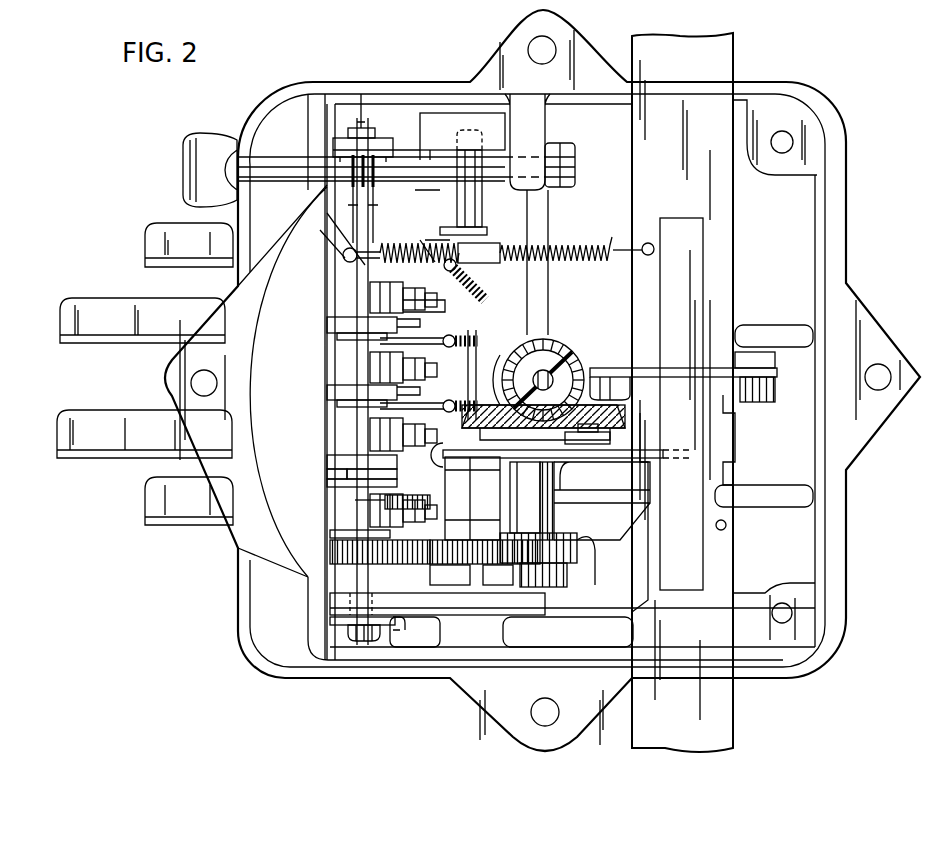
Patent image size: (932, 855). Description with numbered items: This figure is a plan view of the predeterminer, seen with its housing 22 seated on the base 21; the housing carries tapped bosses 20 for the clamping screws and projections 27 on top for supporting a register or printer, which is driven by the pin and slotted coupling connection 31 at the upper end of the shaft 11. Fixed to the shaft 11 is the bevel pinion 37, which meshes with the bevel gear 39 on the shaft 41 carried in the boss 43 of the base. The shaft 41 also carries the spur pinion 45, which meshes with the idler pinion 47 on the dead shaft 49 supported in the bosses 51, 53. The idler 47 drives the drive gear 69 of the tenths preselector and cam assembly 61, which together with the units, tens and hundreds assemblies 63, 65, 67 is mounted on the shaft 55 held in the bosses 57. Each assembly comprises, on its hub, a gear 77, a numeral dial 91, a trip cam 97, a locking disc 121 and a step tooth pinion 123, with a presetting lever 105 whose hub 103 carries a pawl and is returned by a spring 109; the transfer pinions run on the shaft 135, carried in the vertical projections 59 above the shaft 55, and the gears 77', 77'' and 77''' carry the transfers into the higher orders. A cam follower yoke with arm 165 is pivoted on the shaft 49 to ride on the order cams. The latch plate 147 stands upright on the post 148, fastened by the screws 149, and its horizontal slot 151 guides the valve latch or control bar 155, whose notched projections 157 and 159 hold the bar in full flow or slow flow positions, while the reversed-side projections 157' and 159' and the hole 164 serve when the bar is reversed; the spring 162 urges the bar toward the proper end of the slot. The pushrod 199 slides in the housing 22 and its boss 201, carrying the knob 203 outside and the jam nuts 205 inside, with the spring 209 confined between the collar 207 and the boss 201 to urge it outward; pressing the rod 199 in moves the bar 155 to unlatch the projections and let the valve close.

The shaft 11 is at (543, 350).
The bosses 20 is at (766, 168).
The base 21 is at (548, 275).
The predeterminer housing 22 is at (846, 563).
The projections 27 is at (576, 40).
The pin and slotted coupling connection 31 is at (560, 365).
The bevel pinion 37 is at (528, 348).
The bevel gear 39 is at (478, 345).
The shaft 41 is at (530, 585).
The boss 43 is at (540, 491).
The spur pinion 45 is at (585, 547).
The idler pinion 47 is at (432, 566).
The dead shaft 49 is at (462, 205).
The boss 51 is at (448, 627).
The boss 53 is at (445, 133).
The shaft 55 is at (361, 94).
The bosses 57 is at (340, 146).
The vertical projections 59 is at (398, 148).
The preselector and cam assembly 61 is at (403, 510).
The units assembly 63 is at (403, 434).
The tens assembly 65 is at (403, 367).
The hundreds assembly 67 is at (403, 297).
The drive gear 69 is at (428, 568).
The gear 77 is at (345, 381).
The gear 77' is at (341, 449).
The drive gear 77'' is at (352, 390).
The drive gear 77''' is at (347, 331).
The numeral wheel or dial 91 is at (335, 514).
The trip cam 97 is at (352, 500).
The hub 103 is at (330, 482).
The presetting lever 105 is at (150, 297).
The spring 109 is at (487, 293).
The locking disc 121 is at (343, 472).
The step tooth pinion 123 is at (327, 463).
The shaft 135 is at (360, 303).
The latch plate 147 is at (770, 373).
The post 148 is at (758, 332).
The screws 149 is at (765, 400).
The horizontal slot 151 is at (620, 355).
The valve latch or control bar 155 is at (724, 262).
The projection 157 is at (566, 450).
The projection 157' is at (764, 483).
The projection 159 is at (648, 502).
The projection 159' is at (748, 440).
The spring 162 is at (430, 243).
The hole 164 is at (727, 526).
The arm 165 is at (395, 248).
The pushrod 199 is at (420, 172).
The boss 201 is at (540, 126).
The knob 203 is at (190, 162).
The jam nuts 205 is at (568, 188).
The collar 207 is at (345, 184).
The spring 209 is at (378, 178).